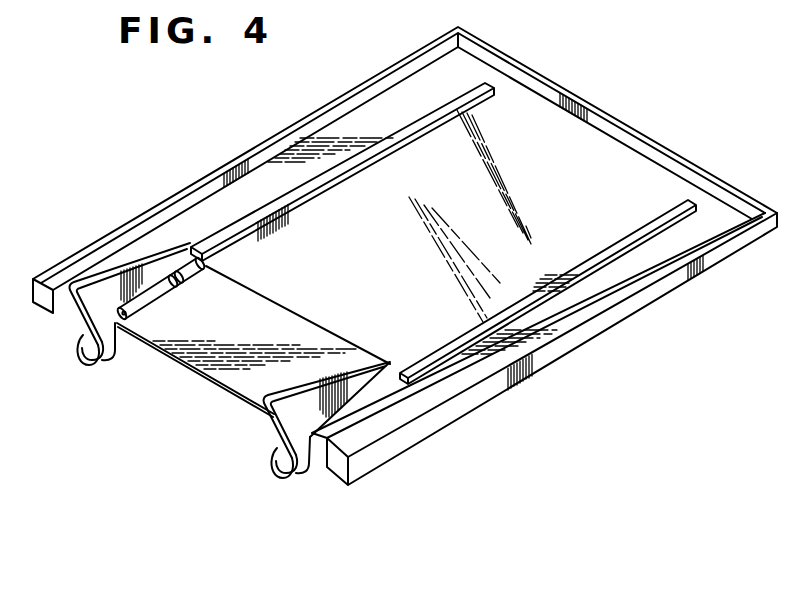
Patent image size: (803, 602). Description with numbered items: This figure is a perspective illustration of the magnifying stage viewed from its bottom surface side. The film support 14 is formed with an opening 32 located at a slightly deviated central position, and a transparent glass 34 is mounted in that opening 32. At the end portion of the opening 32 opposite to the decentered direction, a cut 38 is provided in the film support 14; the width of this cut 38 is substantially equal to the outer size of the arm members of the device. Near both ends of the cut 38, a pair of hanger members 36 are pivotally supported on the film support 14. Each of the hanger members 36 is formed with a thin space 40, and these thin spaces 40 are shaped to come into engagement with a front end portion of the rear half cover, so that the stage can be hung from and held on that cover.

The film support 14 is at (603, 352).
The opening 32 is at (519, 128).
The transparent glass 34 is at (611, 197).
The hanger members 36 is at (110, 282).
The cut 38 is at (207, 383).
The thin spaces 40 is at (80, 340).